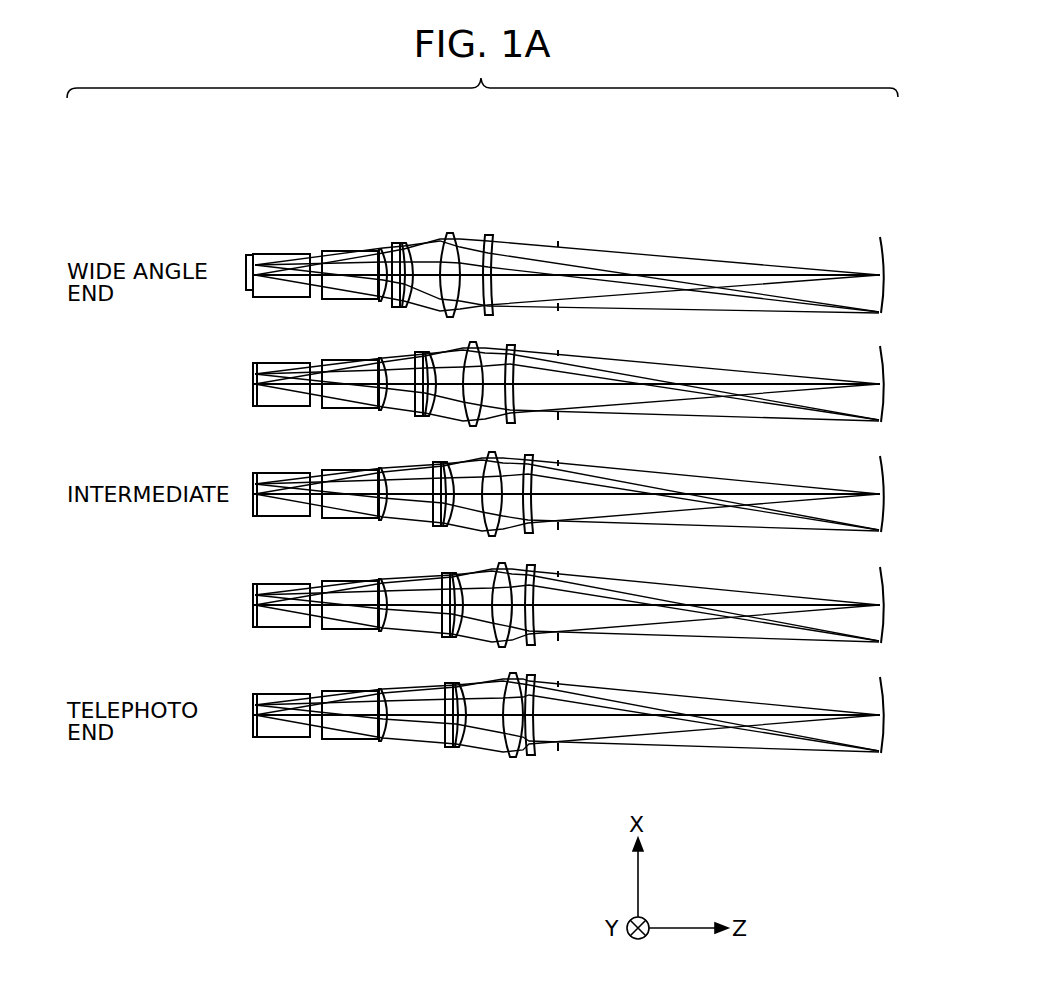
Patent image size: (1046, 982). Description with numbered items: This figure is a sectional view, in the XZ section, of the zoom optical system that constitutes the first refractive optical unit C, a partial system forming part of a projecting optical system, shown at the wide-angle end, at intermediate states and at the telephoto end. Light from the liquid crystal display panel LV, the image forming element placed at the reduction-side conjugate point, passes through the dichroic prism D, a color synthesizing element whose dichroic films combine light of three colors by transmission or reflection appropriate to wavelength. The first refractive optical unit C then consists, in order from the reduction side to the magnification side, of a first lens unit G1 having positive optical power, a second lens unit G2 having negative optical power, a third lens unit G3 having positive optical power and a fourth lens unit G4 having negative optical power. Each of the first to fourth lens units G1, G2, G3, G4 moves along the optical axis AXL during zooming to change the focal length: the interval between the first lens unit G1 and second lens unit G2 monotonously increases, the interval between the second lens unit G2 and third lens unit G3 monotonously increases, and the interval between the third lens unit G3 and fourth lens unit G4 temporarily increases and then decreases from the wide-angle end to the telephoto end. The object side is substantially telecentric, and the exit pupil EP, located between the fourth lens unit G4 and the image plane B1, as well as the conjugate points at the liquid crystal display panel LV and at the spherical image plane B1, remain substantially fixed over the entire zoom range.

The liquid crystal display panel LV is at (247, 272).
The dichroic prism D is at (333, 253).
The first lens unit G1 is at (380, 250).
The second lens unit G2 is at (414, 235).
The third lens unit G3 is at (446, 233).
The fourth lens unit G4 is at (487, 233).
The first refractive optical unit C is at (515, 198).
The exit pupil EP is at (558, 241).
The optical axis AXL is at (661, 275).
The image plane B1 is at (880, 237).